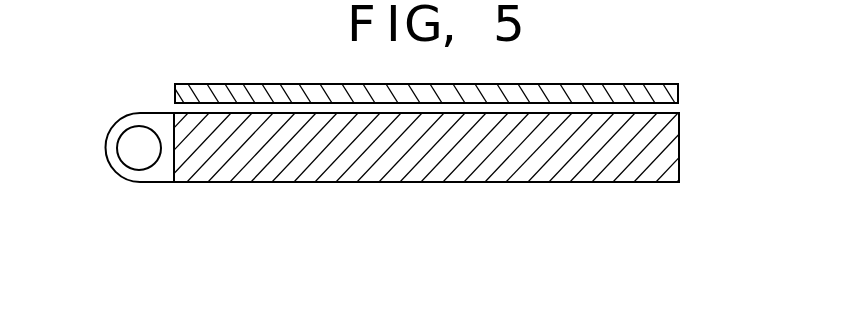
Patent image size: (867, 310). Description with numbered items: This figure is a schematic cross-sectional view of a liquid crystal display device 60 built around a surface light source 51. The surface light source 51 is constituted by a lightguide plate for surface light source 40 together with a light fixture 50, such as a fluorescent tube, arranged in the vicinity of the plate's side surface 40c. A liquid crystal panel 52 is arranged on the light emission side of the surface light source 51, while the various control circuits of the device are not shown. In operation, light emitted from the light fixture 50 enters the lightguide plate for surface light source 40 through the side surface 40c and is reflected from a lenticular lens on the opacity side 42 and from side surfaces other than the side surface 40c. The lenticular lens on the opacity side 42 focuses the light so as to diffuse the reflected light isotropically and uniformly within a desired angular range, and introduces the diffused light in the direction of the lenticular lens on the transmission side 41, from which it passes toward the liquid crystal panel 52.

The lightguide plate for surface light source 40 is at (427, 167).
The side surface 40c is at (167, 183).
The lenticular lens on the transmission side 41 is at (672, 110).
The lenticular lens on the opacity side 42 is at (650, 182).
The light fixture 50 is at (137, 163).
The surface light source 51 is at (92, 77).
The liquid crystal panel 52 is at (173, 97).
The liquid crystal display device 60 is at (668, 78).